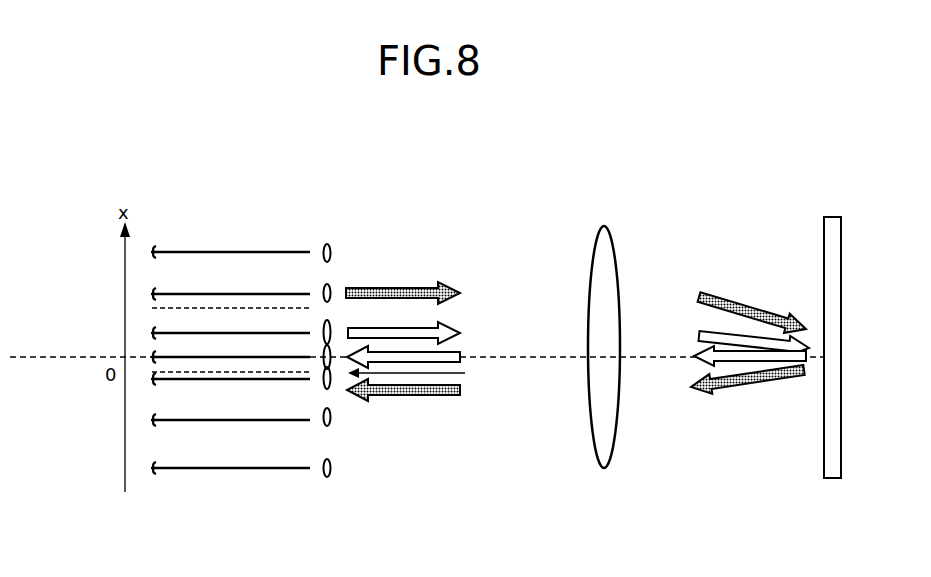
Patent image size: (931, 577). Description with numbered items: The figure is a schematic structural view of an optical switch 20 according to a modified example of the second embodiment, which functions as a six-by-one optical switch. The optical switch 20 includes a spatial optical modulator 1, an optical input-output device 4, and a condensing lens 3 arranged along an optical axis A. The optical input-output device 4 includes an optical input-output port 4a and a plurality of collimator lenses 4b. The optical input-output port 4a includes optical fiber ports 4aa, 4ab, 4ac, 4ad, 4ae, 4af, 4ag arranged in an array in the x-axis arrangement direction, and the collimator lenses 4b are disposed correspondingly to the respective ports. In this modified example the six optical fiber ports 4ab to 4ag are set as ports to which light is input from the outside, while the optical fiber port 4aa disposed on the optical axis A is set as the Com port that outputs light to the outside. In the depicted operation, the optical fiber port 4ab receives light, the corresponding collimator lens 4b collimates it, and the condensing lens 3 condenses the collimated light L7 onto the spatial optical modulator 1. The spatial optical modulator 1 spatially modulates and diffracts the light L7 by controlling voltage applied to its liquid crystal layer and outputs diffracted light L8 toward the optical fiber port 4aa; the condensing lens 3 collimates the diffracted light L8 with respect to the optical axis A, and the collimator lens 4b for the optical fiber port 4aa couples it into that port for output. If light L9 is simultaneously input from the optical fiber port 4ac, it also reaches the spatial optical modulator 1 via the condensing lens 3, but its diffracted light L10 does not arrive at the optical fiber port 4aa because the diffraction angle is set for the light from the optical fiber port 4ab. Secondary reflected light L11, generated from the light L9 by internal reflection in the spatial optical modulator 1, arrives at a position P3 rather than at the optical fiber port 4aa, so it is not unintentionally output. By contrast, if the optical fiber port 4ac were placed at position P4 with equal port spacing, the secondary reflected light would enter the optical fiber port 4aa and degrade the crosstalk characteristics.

The spatial optical modulator 1 is at (833, 217).
The optical switch 20 is at (770, 158).
The condensing lens 3 is at (604, 227).
The optical input-output device 4 is at (336, 150).
The optical input-output port 4a is at (224, 150).
The collimator lenses 4b is at (333, 214).
The optical fiber port 4aa is at (205, 355).
The optical fiber port 4ab is at (238, 331).
The optical fiber port 4ac is at (272, 292).
The optical fiber port 4ad is at (297, 250).
The optical fiber port 4ae is at (226, 381).
The optical fiber port 4af is at (268, 422).
The optical fiber port 4ag is at (300, 470).
The optical axis A is at (62, 355).
The position P3 is at (188, 374).
The position P4 is at (180, 300).
The collimated light L7 is at (385, 328).
The diffracted light L8 is at (398, 364).
The light L9 is at (418, 288).
The diffracted light L10 is at (433, 398).
The secondary reflected light L11 is at (466, 378).